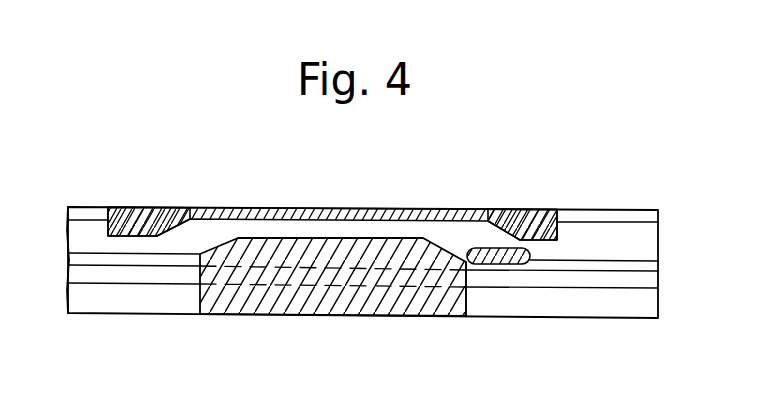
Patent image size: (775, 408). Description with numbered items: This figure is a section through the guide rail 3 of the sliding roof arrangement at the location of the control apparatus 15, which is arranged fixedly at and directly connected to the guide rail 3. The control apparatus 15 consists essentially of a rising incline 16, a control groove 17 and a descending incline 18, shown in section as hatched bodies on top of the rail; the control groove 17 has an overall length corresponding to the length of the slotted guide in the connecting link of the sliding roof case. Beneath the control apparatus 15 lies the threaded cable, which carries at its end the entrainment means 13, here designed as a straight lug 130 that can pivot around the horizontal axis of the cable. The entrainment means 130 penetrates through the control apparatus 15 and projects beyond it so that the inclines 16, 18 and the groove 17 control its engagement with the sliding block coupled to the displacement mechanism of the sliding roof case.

The guide rail 3 is at (618, 297).
The entrainment means 13 is at (488, 264).
The entrainment means 130 is at (522, 267).
The control apparatus 15 is at (393, 208).
The rising incline 16 is at (220, 249).
The control groove 17 is at (320, 227).
The descending incline 18 is at (464, 259).